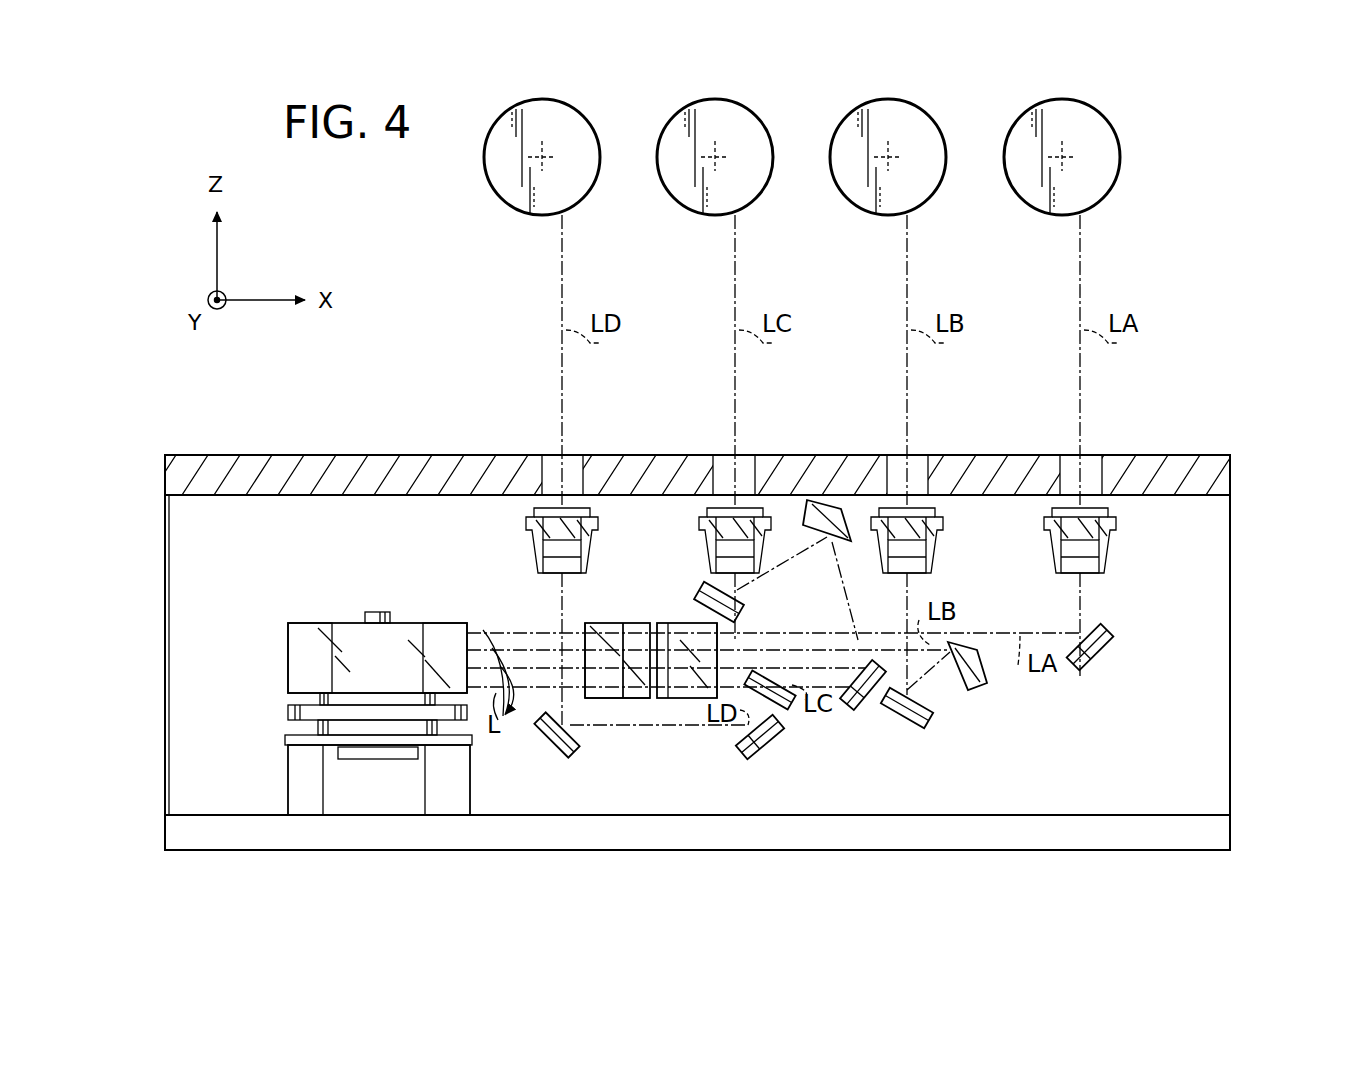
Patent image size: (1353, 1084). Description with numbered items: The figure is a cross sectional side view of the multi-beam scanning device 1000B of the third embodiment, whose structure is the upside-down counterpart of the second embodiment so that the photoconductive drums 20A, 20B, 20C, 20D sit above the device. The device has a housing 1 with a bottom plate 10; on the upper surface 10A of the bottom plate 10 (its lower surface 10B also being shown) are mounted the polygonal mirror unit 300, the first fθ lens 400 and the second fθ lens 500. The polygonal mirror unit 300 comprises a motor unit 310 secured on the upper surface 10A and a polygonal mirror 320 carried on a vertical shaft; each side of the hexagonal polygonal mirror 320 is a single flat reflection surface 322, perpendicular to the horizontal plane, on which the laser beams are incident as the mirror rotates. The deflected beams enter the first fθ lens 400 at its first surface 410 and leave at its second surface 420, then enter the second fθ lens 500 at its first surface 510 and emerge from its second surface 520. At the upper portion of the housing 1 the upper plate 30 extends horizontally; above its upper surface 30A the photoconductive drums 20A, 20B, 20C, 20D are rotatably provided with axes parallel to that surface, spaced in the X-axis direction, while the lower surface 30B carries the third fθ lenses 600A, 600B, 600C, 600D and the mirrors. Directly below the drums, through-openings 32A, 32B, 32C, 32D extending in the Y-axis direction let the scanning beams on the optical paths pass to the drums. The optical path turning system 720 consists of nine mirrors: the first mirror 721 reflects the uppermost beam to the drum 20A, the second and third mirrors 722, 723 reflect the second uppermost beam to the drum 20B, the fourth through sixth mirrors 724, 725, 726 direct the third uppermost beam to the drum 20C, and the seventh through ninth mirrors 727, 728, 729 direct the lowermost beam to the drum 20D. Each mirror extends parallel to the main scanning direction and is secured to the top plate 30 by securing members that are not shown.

The housing 1 is at (1232, 630).
The bottom plate 10 is at (1138, 856).
The upper surface of the bottom plate 10A is at (1105, 790).
The base lower surface 10B is at (1052, 852).
The photoconductive drum 20A is at (1087, 196).
The photoconductive drum 20B is at (913, 196).
The photoconductive drum 20C is at (740, 196).
The photoconductive drum 20D is at (567, 196).
The upper plate 30 is at (1212, 452).
The upper surface of the upper plate 30A is at (1165, 455).
The lid lower surface 30B is at (1208, 498).
The opening 32A is at (1066, 455).
The opening 32B is at (893, 455).
The opening 32C is at (720, 455).
The opening 32D is at (548, 455).
The polygonal mirror unit 300 is at (351, 615).
The motor unit 310 is at (295, 778).
The polygonal mirror 320 is at (445, 623).
The reflection surface 322 is at (295, 650).
The first fθ lens 400 is at (595, 620).
The first surface of the first fθ lens 410 is at (575, 628).
The second surface of the first fθ lens 420 is at (656, 700).
The second fθ lens 500 is at (690, 620).
The first surface of the second fθ lens 510 is at (662, 603).
The second surface of the second fθ lens 520 is at (725, 640).
The third fθ lens 600A is at (1112, 550).
The third fθ lens 600B is at (938, 550).
The third fθ lens 600C is at (705, 550).
The third fθ lens 600D is at (540, 552).
The optical path turning system 720 is at (837, 644).
The first mirror 721 is at (1108, 645).
The second mirror 722 is at (982, 685).
The third mirror 723 is at (930, 722).
The fourth mirror 724 is at (862, 705).
The fifth mirror 725 is at (845, 545).
The sixth mirror 726 is at (742, 605).
The seventh mirror 727 is at (790, 703).
The eighth mirror 728 is at (748, 752).
The ninth mirror 729 is at (552, 750).
The multi-beam scanning device 1000B is at (318, 446).